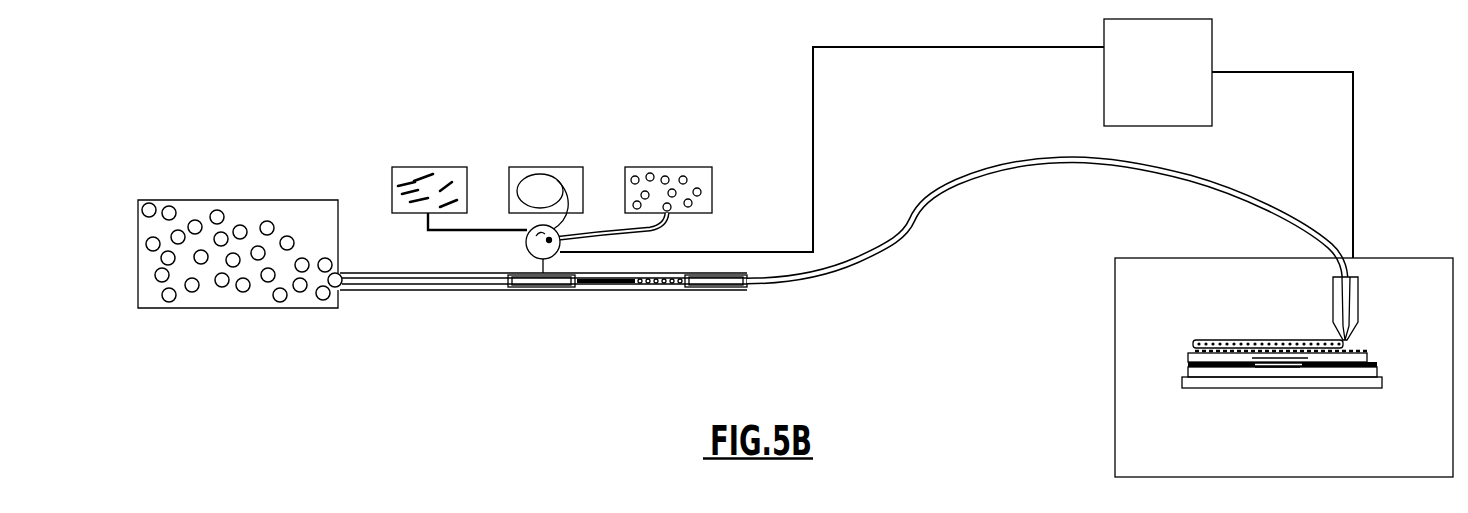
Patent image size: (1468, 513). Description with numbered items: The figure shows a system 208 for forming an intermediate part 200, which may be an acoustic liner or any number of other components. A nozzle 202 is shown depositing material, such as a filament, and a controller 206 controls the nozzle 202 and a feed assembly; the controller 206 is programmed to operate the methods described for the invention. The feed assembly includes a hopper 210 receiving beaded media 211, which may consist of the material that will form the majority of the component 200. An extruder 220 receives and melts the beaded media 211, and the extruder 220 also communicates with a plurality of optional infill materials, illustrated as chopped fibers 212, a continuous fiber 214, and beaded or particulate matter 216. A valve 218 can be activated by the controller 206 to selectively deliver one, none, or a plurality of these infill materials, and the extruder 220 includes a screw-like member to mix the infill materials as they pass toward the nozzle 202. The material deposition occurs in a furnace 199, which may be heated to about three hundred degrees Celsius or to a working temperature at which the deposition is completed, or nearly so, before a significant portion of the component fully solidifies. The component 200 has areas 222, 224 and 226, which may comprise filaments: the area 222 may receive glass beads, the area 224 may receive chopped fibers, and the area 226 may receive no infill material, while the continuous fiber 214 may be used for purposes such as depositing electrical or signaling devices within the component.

The furnace 199 is at (1125, 292).
The intermediate part 200 is at (1196, 402).
The nozzle 202 is at (1358, 292).
The controller 206 is at (1198, 33).
The system 208 is at (1002, 167).
The hopper 210 is at (287, 210).
The beaded media 211 is at (163, 295).
The chopped fibers 212 is at (428, 167).
The continuous fiber 214 is at (542, 167).
The beaded or particulate matter 216 is at (691, 167).
The valve 218 is at (527, 251).
The extruder 220 is at (497, 282).
The area 222 is at (1346, 344).
The area 224 is at (1188, 367).
The area 226 is at (1365, 375).